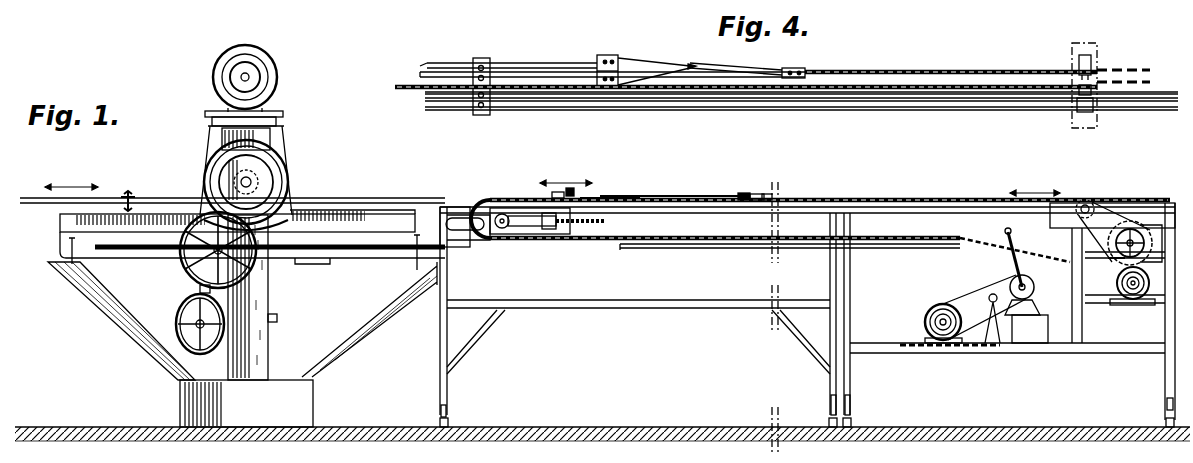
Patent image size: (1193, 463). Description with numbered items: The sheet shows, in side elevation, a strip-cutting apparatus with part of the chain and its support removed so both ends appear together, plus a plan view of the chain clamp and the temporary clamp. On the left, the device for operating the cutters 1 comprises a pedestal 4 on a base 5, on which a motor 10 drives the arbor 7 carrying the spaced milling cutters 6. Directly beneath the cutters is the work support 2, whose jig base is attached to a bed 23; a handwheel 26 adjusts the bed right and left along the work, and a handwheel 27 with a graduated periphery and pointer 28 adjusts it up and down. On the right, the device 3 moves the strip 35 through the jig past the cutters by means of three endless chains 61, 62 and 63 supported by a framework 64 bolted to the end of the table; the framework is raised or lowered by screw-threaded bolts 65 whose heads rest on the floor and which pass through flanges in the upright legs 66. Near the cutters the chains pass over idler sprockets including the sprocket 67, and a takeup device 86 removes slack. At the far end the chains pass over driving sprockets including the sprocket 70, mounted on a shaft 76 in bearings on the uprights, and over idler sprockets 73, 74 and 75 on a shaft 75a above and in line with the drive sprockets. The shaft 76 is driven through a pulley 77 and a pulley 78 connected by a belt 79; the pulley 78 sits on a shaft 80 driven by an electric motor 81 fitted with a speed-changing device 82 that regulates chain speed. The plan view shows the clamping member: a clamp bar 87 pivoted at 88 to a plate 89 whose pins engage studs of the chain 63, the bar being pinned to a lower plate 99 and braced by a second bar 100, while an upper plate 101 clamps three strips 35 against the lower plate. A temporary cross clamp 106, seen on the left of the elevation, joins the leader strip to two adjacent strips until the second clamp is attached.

In FIG. 1, the device for operating the cutters 1 is at (259, 178).
In FIG. 1, the devices for supporting and guiding the strip 2 is at (300, 214).
In FIG. 1, the device including chains for moving the strip 3 is at (770, 192).
In FIG. 4, the device including chains for moving the strip 3 is at (597, 60).
In FIG. 1, the pedestal 4 is at (265, 362).
In FIG. 1, the base 5 is at (300, 404).
In FIG. 1, the cutters 6 is at (262, 178).
In FIG. 1, the shaft or arbor 7 is at (252, 186).
In FIG. 1, the motor 10 is at (278, 80).
In FIG. 1, the bed 23 is at (356, 222).
In FIG. 1, the handwheel 26 is at (182, 266).
In FIG. 1, the handwheel 27 is at (178, 316).
In FIG. 1, the pointer 28 is at (200, 290).
In FIG. 1, the strip 35 is at (37, 203).
In FIG. 4, the strip 35 is at (420, 66).
In FIG. 4, the endless chain 61 is at (893, 71).
In FIG. 4, the endless chain 62 is at (926, 84).
In FIG. 1, the endless chain 63 is at (916, 200).
In FIG. 1, the framework 64 is at (452, 283).
In FIG. 1, the screw-threaded bolts 65 is at (450, 420).
In FIG. 1, the upright legs 66 is at (452, 388).
In FIG. 1, the idler sprocket 67 is at (484, 208).
In FIG. 1, the driving sprocket 70 is at (1135, 228).
In FIG. 1, the idler sprocket 73 is at (1095, 205).
In FIG. 4, the idler sprocket 73 is at (1082, 100).
In FIG. 4, the idler sprocket 74 is at (1090, 88).
In FIG. 4, the idler sprocket 75 is at (1092, 68).
In FIG. 1, the shaft 75a is at (1085, 200).
In FIG. 1, the shaft 76 is at (1116, 240).
In FIG. 1, the pulley 77 is at (1105, 232).
In FIG. 1, the pulley 78 is at (1117, 284).
In FIG. 1, the belt 79 is at (1158, 225).
In FIG. 1, the shaft 80 is at (1133, 305).
In FIG. 1, the electric motor 81 is at (948, 304).
In FIG. 1, the speed-changing device 82 is at (1018, 278).
In FIG. 1, the takeup device 86 is at (522, 244).
In FIG. 1, the clamp bar 87 is at (684, 196).
In FIG. 4, the clamp bar 87 is at (745, 62).
In FIG. 1, the pivot 88 is at (744, 194).
In FIG. 4, the pivot 88 is at (788, 68).
In FIG. 4, the plate 89 is at (805, 70).
In FIG. 1, the lower plate 99 is at (574, 192).
In FIG. 4, the lower plate 99 is at (625, 60).
In FIG. 1, the second bar 100 is at (610, 195).
In FIG. 4, the second bar 100 is at (690, 64).
In FIG. 1, the upper plate 101 is at (564, 192).
In FIG. 1, the cross clamp 106 is at (130, 192).